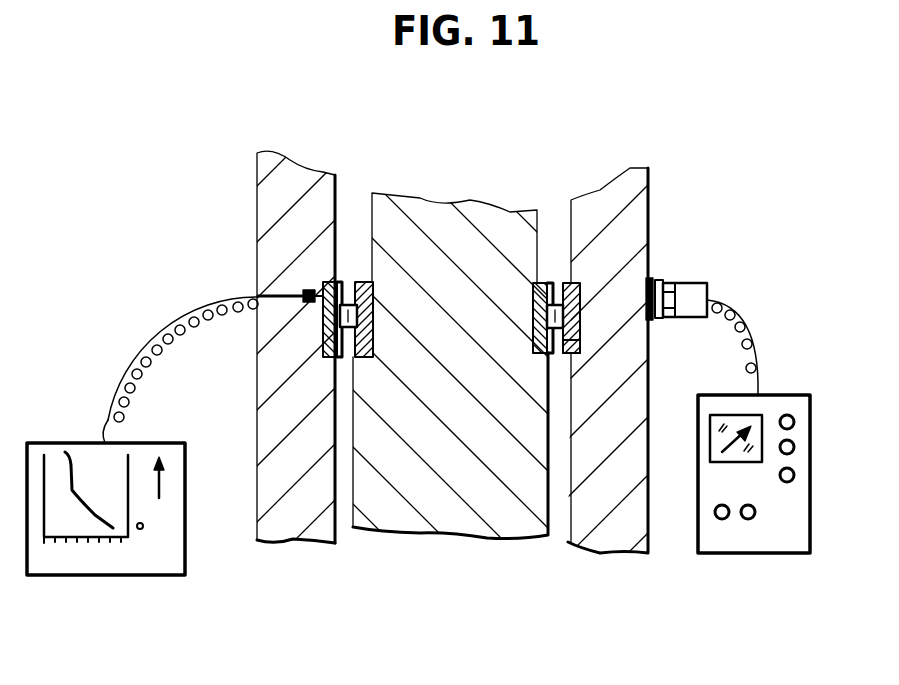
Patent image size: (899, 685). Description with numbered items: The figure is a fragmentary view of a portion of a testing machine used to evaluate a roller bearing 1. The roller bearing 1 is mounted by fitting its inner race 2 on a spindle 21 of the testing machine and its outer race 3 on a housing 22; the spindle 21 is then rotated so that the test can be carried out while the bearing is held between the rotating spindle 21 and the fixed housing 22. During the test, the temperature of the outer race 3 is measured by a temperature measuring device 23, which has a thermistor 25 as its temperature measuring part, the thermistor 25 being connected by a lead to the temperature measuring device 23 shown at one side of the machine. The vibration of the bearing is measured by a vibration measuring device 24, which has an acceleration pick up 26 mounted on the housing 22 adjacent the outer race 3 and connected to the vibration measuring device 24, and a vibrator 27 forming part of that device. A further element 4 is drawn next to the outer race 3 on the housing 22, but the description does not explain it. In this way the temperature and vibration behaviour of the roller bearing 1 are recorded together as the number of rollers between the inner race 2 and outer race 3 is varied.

The roller bearing 1 is at (591, 267).
The inner race 2 is at (533, 291).
The outer race 3 is at (580, 340).
The sensor holder 4 is at (580, 294).
The spindle 21 is at (468, 522).
The housing 22 is at (612, 537).
The temperature measuring device 23 is at (76, 410).
The vibration measuring device 24 is at (779, 461).
The thermistor 25 is at (305, 296).
The acceleration pick up 26 is at (708, 283).
The vibrator 27 is at (753, 540).